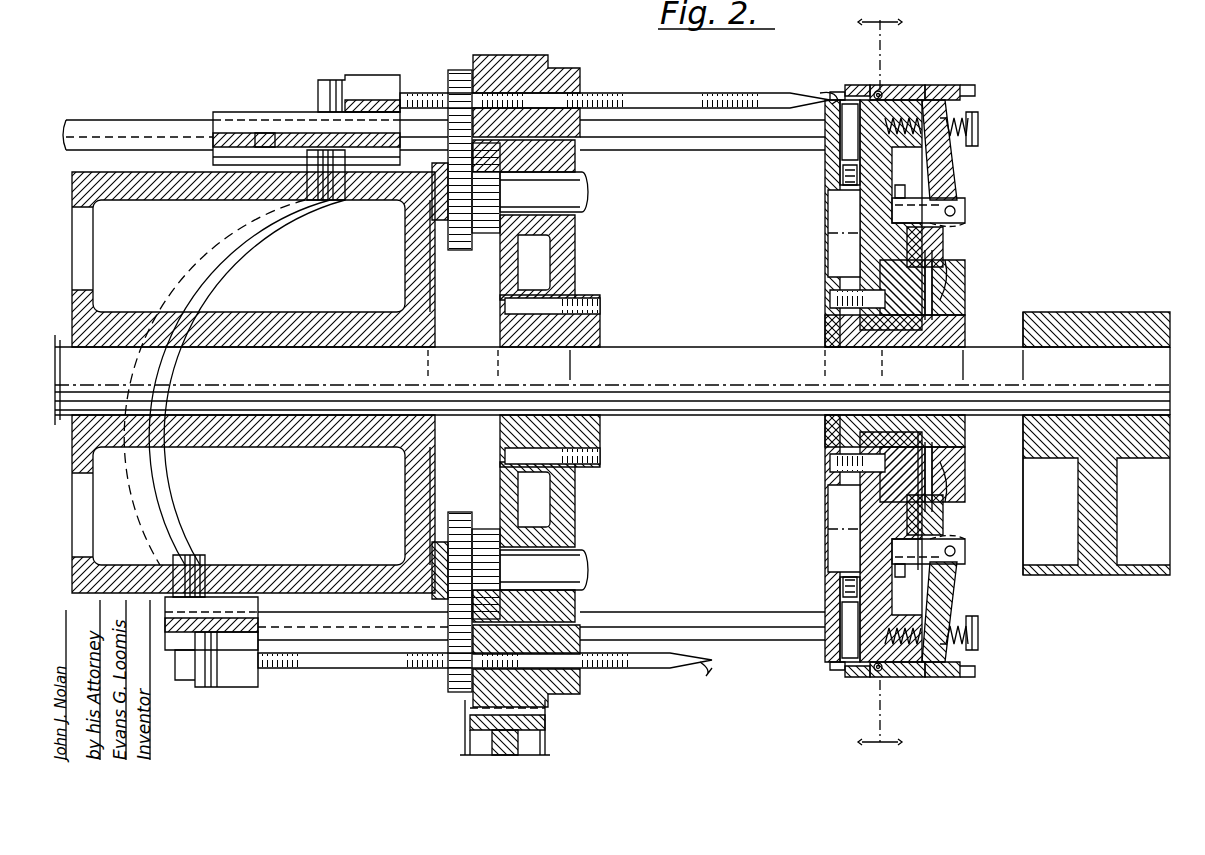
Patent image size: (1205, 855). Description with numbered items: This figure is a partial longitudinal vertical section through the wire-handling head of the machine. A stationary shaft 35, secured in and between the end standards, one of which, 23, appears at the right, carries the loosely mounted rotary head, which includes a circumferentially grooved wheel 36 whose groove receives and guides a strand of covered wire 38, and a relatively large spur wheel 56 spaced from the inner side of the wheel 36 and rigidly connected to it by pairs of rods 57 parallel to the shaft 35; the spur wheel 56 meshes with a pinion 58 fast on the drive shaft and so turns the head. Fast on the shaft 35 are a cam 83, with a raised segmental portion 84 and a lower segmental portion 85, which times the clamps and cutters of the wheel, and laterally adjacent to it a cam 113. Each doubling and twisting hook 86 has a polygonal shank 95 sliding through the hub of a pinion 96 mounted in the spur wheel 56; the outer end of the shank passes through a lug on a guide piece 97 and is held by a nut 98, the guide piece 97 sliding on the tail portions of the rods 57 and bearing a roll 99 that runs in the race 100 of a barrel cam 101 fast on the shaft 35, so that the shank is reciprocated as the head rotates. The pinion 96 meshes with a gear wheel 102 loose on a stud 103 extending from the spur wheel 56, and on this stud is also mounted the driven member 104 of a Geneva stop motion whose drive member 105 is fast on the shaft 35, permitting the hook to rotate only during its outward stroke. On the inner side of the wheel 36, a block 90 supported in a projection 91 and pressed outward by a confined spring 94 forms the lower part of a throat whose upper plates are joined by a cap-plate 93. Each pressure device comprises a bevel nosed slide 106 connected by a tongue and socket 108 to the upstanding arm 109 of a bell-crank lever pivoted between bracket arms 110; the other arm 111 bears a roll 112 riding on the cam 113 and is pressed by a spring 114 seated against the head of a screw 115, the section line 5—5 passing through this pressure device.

The section line 5- 5 is at (880, 382).
The frame bearing block 23 is at (1096, 443).
The stationary shaft 35 is at (612, 380).
The circumferentially grooved wheel element 36 is at (835, 236).
The strand of covered wire 38 is at (882, 88).
The spur wheel 56 is at (548, 55).
The connecting rods 57 is at (122, 122).
The pinion 58 is at (548, 735).
The cam 83 is at (933, 265).
The raised segmental portion 84 is at (945, 244).
The lower segmental portion 85 is at (948, 292).
The doubling and twisting hook 86 is at (822, 92).
The block 90 is at (835, 175).
The projection 91 is at (832, 160).
The cap-plate 93 is at (850, 84).
The confined spring 94 is at (840, 195).
The polygonal shank 95 is at (700, 92).
The pinion 96 is at (462, 68).
The guide piece 97 is at (232, 112).
The nut 98 is at (322, 75).
The roll 99 is at (335, 198).
The race 100 is at (232, 285).
The barrel cam 101 is at (200, 188).
The gear wheel 102 is at (470, 240).
The stud 103 is at (544, 381).
The driven member of Geneva stop motion 104 is at (480, 250).
The drive member of Geneva stop motion 105 is at (405, 470).
The bevel nosed slide 106 is at (950, 84).
The tongue and socket 108 is at (928, 84).
The upstanding arm 109 is at (945, 160).
The bracket arms 110 is at (967, 204).
The lever arm 111 is at (968, 224).
The roll 112 is at (906, 190).
The cam 113 is at (922, 484).
The spring 114 is at (975, 110).
The screw 115 is at (980, 118).